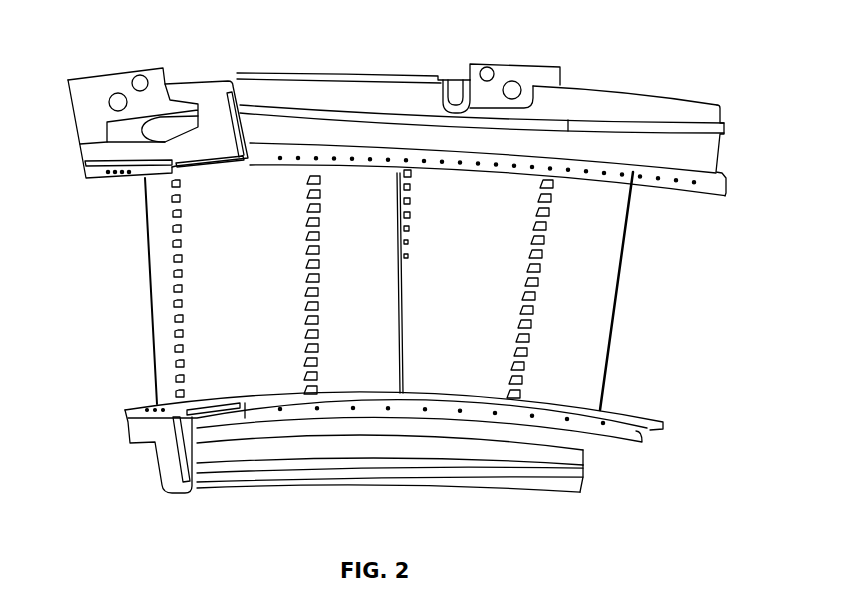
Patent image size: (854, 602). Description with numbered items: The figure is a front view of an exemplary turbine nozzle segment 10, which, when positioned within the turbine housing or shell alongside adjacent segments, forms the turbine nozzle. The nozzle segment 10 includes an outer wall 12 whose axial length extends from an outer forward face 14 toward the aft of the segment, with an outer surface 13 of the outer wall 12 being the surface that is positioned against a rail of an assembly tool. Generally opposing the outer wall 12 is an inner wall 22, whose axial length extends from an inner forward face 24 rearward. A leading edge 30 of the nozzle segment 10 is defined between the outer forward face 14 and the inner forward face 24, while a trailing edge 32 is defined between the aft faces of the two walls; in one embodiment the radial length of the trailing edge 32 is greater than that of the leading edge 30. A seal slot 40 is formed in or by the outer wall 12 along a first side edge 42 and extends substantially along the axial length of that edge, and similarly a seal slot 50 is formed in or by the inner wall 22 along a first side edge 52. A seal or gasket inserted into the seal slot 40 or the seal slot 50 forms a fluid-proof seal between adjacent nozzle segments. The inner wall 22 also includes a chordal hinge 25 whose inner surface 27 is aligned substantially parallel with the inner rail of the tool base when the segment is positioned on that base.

The nozzle segment 10 is at (74, 36).
The outer wall 12 is at (388, 90).
The outer surface 13 is at (583, 86).
The outer forward face 14 is at (650, 105).
The inner wall 22 is at (347, 475).
The inner forward face 24 is at (522, 468).
The chordal hinge 25 is at (250, 470).
The inner surface 27 is at (290, 483).
The leading edge 30 is at (400, 328).
The trailing edge 32 is at (146, 268).
The seal slot 40 is at (85, 164).
The first side edge 42 is at (182, 96).
The seal slot 50 is at (157, 410).
The first side edge 52 is at (168, 460).